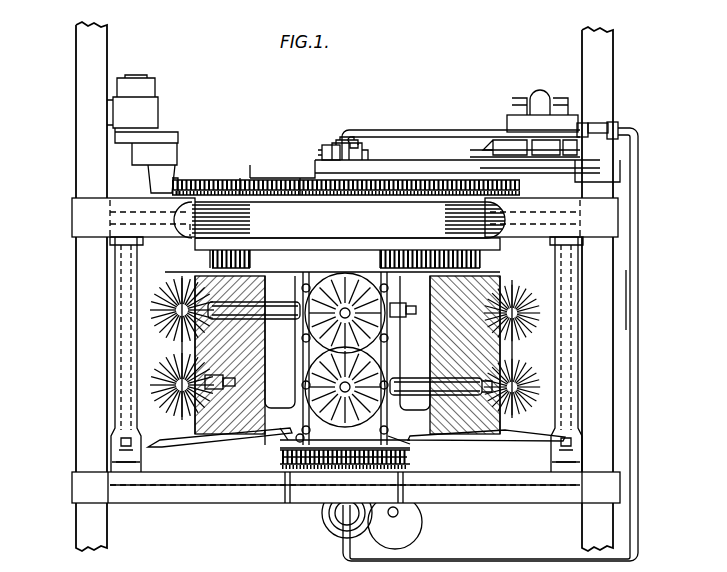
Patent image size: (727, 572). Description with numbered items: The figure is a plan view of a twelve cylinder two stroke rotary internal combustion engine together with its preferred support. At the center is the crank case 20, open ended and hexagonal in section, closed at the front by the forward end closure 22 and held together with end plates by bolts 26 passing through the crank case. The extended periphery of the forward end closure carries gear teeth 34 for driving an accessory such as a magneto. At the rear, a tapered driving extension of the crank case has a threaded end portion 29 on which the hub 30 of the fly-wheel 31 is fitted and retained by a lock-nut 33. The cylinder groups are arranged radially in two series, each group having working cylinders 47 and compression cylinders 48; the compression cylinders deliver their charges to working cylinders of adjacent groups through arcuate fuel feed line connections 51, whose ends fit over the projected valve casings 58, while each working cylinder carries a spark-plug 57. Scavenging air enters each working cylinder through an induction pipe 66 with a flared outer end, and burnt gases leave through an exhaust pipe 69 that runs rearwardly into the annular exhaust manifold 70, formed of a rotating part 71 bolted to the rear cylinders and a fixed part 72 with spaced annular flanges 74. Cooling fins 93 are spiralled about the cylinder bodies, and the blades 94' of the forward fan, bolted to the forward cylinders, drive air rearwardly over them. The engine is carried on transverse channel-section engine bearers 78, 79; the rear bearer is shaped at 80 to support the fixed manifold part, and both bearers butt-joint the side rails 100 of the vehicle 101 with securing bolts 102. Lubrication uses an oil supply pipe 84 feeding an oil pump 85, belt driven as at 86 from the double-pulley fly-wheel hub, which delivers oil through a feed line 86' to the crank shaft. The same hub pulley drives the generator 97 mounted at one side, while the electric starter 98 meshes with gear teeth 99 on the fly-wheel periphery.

The crank case 20 is at (424, 442).
The forward end closure 22 is at (290, 440).
The bolts 26 is at (300, 442).
The threaded end portion 29 is at (346, 142).
The hub 30 is at (323, 158).
The fly-wheel 31 is at (257, 182).
The lock-nut 33 is at (366, 150).
The gear teeth 34 is at (410, 460).
The working cylinders 47 is at (340, 290).
The compression cylinders 48 is at (346, 376).
The fuel feed line connections 51 is at (270, 296).
The spark-plug 57 is at (404, 316).
The valve casing 58 is at (192, 348).
The induction pipe 66 is at (268, 395).
The exhaust pipe 69 is at (275, 445).
The exhaust manifold 70 is at (235, 190).
The rotating part 71 is at (474, 262).
The fixed part 72 is at (500, 216).
The annular flange 74 is at (505, 243).
The forward engine bearer 78 is at (516, 500).
The rear engine bearer 79 is at (573, 208).
The shaped portion 80 is at (200, 190).
The oil supply pipe 84 is at (455, 128).
The oil pump 85 is at (567, 177).
The belt drive 86 is at (500, 331).
The feed line 86' is at (651, 300).
The cooling fins 93 is at (530, 338).
The blades of the forward fan 94' is at (346, 484).
The generator 97 is at (538, 95).
The electric starter 98 is at (152, 112).
The gear teeth 99 is at (247, 170).
The side rails 100 is at (122, 392).
The vehicle 101 is at (80, 530).
The securing bolts 102 is at (120, 460).